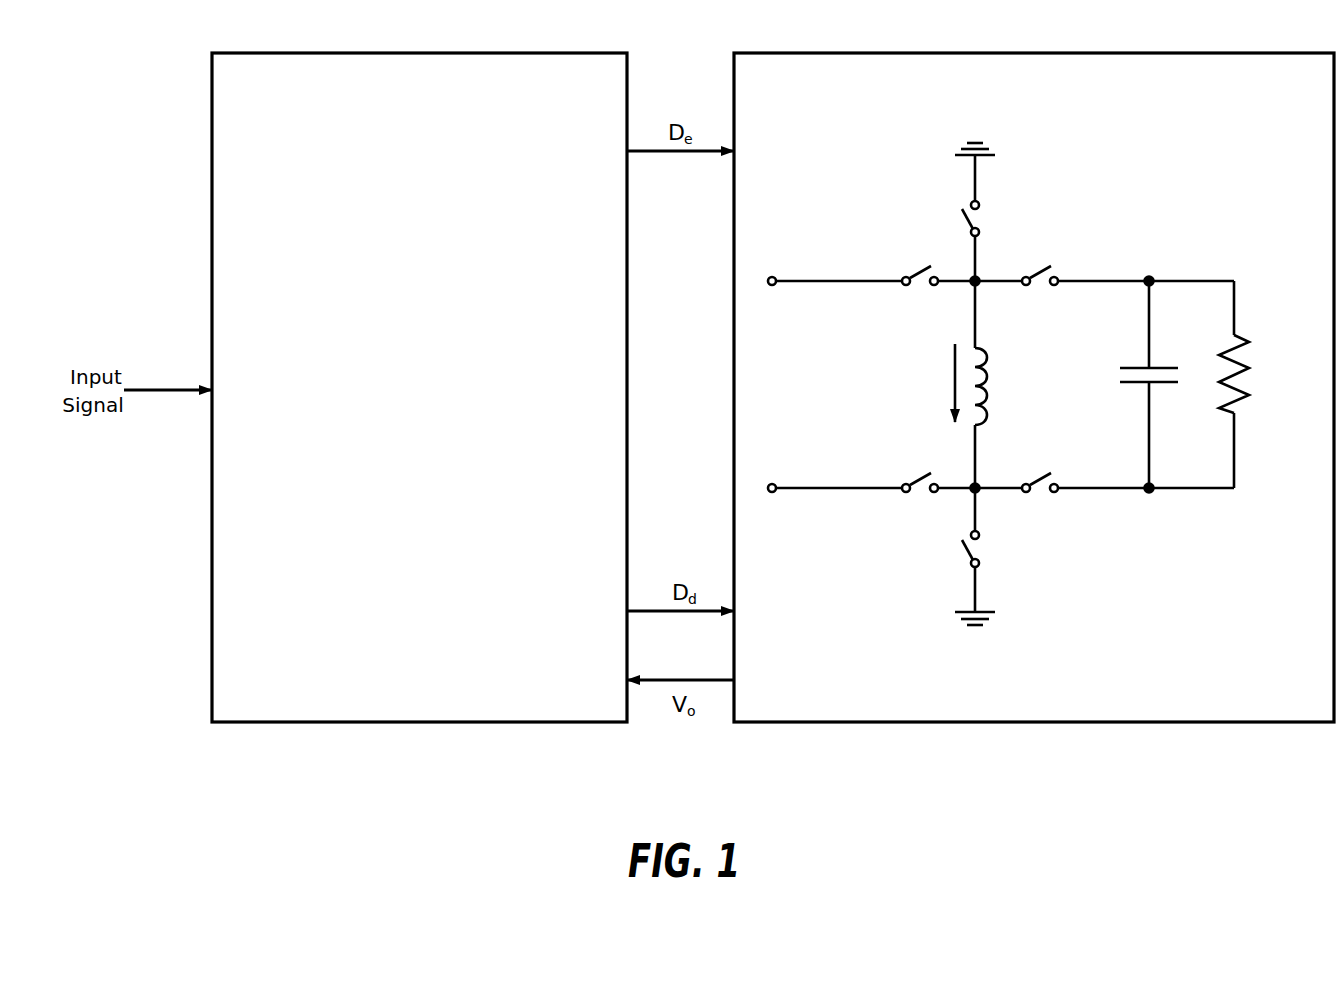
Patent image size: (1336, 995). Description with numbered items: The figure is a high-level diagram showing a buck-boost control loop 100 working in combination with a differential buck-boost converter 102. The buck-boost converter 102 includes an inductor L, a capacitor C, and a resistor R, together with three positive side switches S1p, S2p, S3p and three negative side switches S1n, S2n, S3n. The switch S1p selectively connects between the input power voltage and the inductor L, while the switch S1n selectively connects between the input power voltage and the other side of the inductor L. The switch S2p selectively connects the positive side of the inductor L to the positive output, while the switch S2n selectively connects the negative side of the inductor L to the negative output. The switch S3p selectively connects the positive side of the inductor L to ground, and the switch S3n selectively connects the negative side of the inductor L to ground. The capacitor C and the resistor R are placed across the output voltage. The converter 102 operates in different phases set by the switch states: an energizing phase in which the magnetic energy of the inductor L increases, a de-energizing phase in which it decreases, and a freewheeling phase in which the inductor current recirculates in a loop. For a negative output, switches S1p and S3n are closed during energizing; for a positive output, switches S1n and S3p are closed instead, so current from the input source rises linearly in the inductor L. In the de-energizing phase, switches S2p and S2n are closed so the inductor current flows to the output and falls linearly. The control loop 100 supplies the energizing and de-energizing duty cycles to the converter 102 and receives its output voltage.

The buck-boost control loop 100 is at (422, 53).
The differential buck-boost converter 102 is at (1032, 53).
The positive side switch S1p is at (920, 260).
The positive side switch S2p is at (1041, 260).
The positive side switch S3p is at (990, 218).
The negative side switch S1n is at (920, 468).
The negative side switch S2n is at (1041, 468).
The negative side switch S3n is at (990, 549).
The inductor L is at (994, 386).
The capacitor C is at (1160, 384).
The resistor R is at (1248, 384).